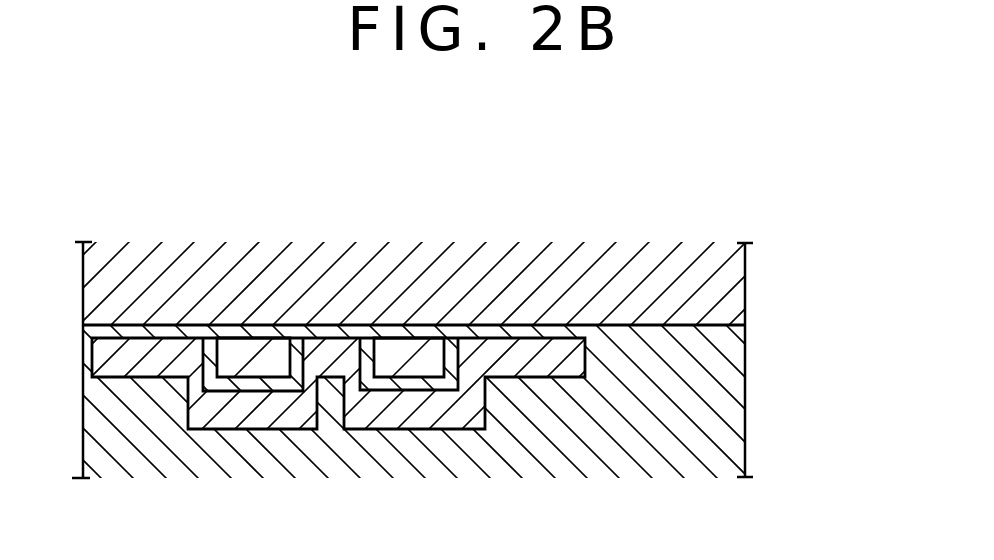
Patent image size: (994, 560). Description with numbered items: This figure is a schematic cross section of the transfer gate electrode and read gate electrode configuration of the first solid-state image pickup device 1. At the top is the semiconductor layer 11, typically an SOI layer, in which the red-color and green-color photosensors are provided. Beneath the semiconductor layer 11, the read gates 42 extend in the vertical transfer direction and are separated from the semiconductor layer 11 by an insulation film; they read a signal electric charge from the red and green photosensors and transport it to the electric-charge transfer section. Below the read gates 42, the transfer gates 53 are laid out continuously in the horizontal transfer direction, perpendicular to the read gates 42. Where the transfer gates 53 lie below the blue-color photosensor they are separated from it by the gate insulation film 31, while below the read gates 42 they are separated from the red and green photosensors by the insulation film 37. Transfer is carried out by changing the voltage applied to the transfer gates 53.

The solid-state image pickup device 1 is at (566, 192).
The semiconductor layer 11 is at (722, 285).
The gate insulation film 31 is at (253, 330).
The insulation film 37 is at (368, 342).
The read gate 42 is at (402, 353).
The transfer gate 53 is at (552, 345).